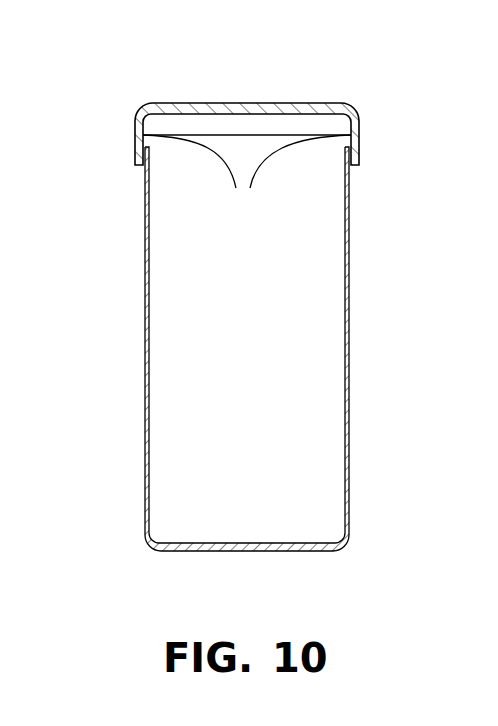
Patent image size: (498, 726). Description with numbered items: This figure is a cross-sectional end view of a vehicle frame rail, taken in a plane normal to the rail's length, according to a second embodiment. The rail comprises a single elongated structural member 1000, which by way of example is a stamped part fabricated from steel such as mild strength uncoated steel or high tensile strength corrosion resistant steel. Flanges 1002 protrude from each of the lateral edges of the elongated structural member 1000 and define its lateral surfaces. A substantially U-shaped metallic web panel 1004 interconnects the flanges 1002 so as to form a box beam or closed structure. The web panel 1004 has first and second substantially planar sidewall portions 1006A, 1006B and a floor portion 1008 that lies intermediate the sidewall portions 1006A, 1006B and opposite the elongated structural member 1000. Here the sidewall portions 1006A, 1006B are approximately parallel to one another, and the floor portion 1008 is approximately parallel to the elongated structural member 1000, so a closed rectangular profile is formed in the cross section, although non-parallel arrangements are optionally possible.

The elongated structural member 1000 is at (247, 103).
The flanges 1002 is at (247, 176).
The substantially U-shaped metallic web panel 1004 is at (238, 373).
The first substantially planar sidewall portion 1006A is at (143, 245).
The second substantially planar sidewall portion 1006B is at (350, 257).
The floor portion 1008 is at (243, 551).